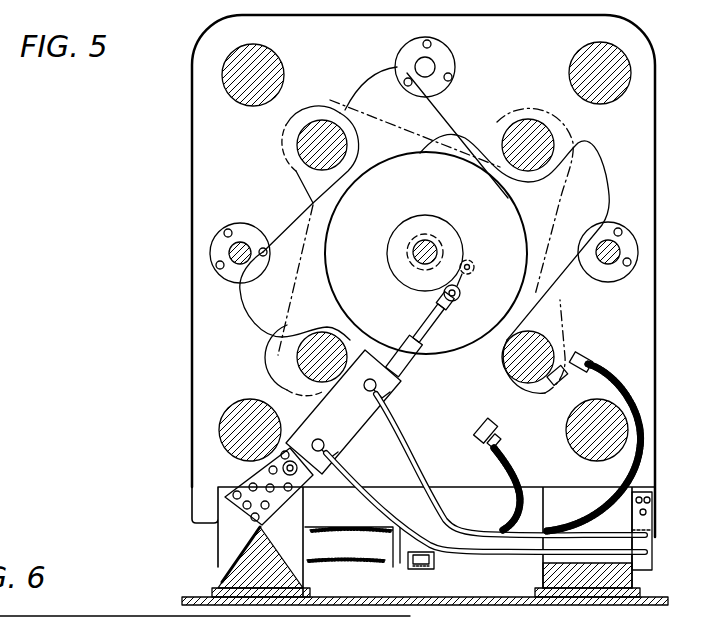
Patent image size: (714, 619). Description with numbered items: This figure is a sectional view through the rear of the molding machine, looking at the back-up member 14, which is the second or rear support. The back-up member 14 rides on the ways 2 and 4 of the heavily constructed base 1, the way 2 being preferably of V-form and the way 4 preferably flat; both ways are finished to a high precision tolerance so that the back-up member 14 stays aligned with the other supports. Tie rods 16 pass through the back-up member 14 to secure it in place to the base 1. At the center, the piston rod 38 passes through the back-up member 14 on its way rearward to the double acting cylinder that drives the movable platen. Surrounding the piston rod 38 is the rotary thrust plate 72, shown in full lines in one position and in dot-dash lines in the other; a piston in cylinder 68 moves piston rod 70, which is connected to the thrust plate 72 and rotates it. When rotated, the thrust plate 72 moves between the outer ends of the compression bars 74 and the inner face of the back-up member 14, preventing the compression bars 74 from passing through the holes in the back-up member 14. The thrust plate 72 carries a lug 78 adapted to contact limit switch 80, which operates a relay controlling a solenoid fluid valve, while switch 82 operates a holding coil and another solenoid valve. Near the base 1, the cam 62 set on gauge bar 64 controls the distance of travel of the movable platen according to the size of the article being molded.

The base 1 is at (650, 601).
The way 2 is at (233, 575).
The way 4 is at (633, 581).
The back-up member 14 is at (201, 147).
The tie rods 16 is at (226, 60).
The piston rod 38 is at (436, 252).
The cam 62 is at (443, 555).
The gauge bar 64 is at (413, 570).
The cylinder 68 is at (348, 436).
The piston rod 70 is at (425, 338).
The rotary thrust plate 72 is at (602, 206).
The compression bars 74 is at (318, 146).
The lug 78 is at (498, 430).
The limit switch 80 is at (592, 362).
The switch 82 is at (494, 444).